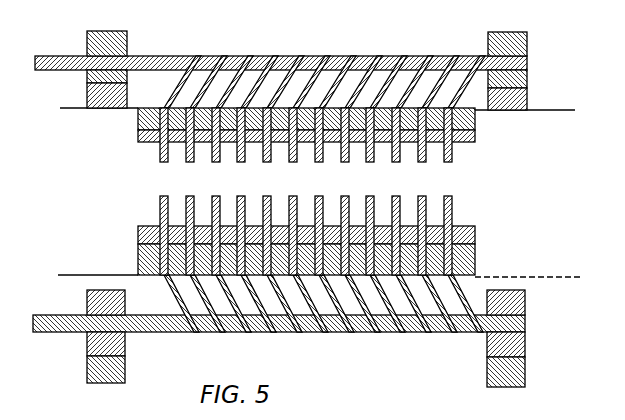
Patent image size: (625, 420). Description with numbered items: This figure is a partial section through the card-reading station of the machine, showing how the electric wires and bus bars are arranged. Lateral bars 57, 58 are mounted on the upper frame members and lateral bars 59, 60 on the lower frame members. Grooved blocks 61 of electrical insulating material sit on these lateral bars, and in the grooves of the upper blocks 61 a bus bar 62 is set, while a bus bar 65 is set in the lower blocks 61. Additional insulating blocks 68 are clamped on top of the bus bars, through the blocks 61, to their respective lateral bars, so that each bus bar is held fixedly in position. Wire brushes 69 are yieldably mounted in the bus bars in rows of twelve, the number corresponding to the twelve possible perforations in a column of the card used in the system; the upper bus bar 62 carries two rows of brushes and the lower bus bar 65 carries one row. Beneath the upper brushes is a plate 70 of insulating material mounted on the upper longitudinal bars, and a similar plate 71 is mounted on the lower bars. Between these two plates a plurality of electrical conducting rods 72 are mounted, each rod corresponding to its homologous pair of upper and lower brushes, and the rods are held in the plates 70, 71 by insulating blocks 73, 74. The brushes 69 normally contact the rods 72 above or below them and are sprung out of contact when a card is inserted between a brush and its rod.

The lateral bar 57 is at (87, 91).
The lateral bar 58 is at (527, 100).
The lateral bar 59 is at (125, 366).
The lateral bar 60 is at (525, 372).
The insulating block 61 is at (87, 77).
The bus bar 62 is at (527, 70).
The bus bar 65 is at (525, 327).
The insulating block 68 is at (127, 43).
The wire brush 69 is at (457, 98).
The plate 70 is at (475, 125).
The plate 71 is at (138, 250).
The electrical conducting rod 72 is at (455, 152).
The insulating block 73 is at (475, 140).
The insulating block 74 is at (138, 230).